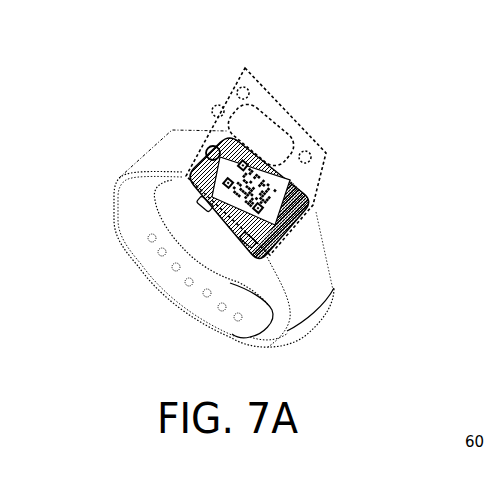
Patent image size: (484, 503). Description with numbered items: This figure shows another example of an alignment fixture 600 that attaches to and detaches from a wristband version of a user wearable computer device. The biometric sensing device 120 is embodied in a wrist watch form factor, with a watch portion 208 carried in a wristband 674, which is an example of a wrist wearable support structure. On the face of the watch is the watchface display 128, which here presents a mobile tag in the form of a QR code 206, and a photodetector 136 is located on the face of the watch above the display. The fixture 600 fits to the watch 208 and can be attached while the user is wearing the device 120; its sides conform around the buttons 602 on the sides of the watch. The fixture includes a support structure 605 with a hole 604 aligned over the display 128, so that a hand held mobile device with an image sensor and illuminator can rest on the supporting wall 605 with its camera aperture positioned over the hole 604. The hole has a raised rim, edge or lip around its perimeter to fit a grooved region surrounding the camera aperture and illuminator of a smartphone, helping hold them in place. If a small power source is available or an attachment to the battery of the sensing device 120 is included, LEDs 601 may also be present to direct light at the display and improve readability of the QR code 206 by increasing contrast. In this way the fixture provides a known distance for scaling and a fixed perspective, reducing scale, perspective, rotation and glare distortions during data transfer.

The biometric sensing device 120 is at (170, 142).
The watchface display 128 is at (218, 175).
The photodetector 136 is at (211, 147).
The QR code 206 is at (242, 190).
The watch portion 208 is at (303, 215).
The alignment fixture 600 is at (292, 226).
The light emitting diode 601 is at (222, 106).
The button 602 is at (244, 240).
The hole 604 is at (297, 140).
The support structure 605 is at (302, 142).
The wristband 674 is at (133, 160).